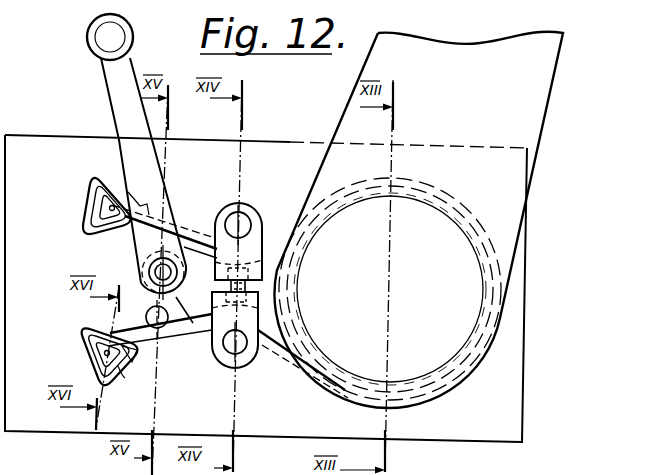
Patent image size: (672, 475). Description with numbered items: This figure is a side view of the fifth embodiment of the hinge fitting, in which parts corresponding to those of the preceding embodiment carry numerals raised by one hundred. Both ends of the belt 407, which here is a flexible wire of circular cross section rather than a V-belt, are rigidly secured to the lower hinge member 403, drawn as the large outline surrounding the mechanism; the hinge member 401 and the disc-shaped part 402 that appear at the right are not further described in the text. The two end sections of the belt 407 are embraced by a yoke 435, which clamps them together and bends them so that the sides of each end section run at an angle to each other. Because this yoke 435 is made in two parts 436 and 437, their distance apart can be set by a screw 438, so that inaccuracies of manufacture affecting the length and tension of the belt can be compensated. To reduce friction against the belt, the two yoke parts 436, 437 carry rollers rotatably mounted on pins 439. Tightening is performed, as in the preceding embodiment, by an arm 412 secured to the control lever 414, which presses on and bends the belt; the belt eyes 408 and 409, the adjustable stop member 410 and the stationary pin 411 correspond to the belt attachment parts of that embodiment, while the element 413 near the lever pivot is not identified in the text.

The body 401 is at (530, 108).
The disc 402 is at (492, 310).
The lower hinge member 403 is at (505, 395).
The belt 407 is at (267, 340).
The eye 408 is at (97, 200).
The eye 409 is at (82, 353).
The stop member 410 is at (143, 313).
The stationary pin 411 is at (118, 377).
The arm 412 is at (175, 337).
The lever pivot 413 is at (150, 273).
The control lever 414 is at (107, 85).
The yoke 435 is at (270, 211).
The yoke part 436 is at (258, 267).
The yoke part 437 is at (260, 300).
The screw 438 is at (260, 287).
The pin 439 is at (233, 222).